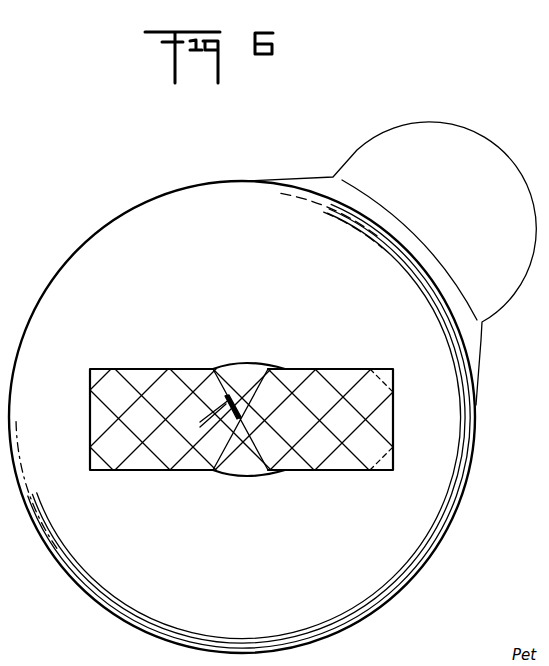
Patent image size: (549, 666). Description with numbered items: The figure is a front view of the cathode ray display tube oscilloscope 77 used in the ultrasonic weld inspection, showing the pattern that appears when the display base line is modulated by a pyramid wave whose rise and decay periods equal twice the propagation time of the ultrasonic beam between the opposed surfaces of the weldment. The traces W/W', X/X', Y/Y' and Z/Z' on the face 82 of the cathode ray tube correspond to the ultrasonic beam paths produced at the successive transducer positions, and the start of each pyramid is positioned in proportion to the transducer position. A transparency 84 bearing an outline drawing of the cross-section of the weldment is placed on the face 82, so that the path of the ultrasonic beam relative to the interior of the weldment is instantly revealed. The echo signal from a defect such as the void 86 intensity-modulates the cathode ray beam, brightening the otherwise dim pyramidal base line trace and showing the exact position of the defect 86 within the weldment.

The cathode ray display tube oscilloscope 77 is at (311, 186).
The face of the cathode ray tube 82 is at (122, 571).
The transparency 84 is at (300, 368).
The void 86 is at (226, 398).